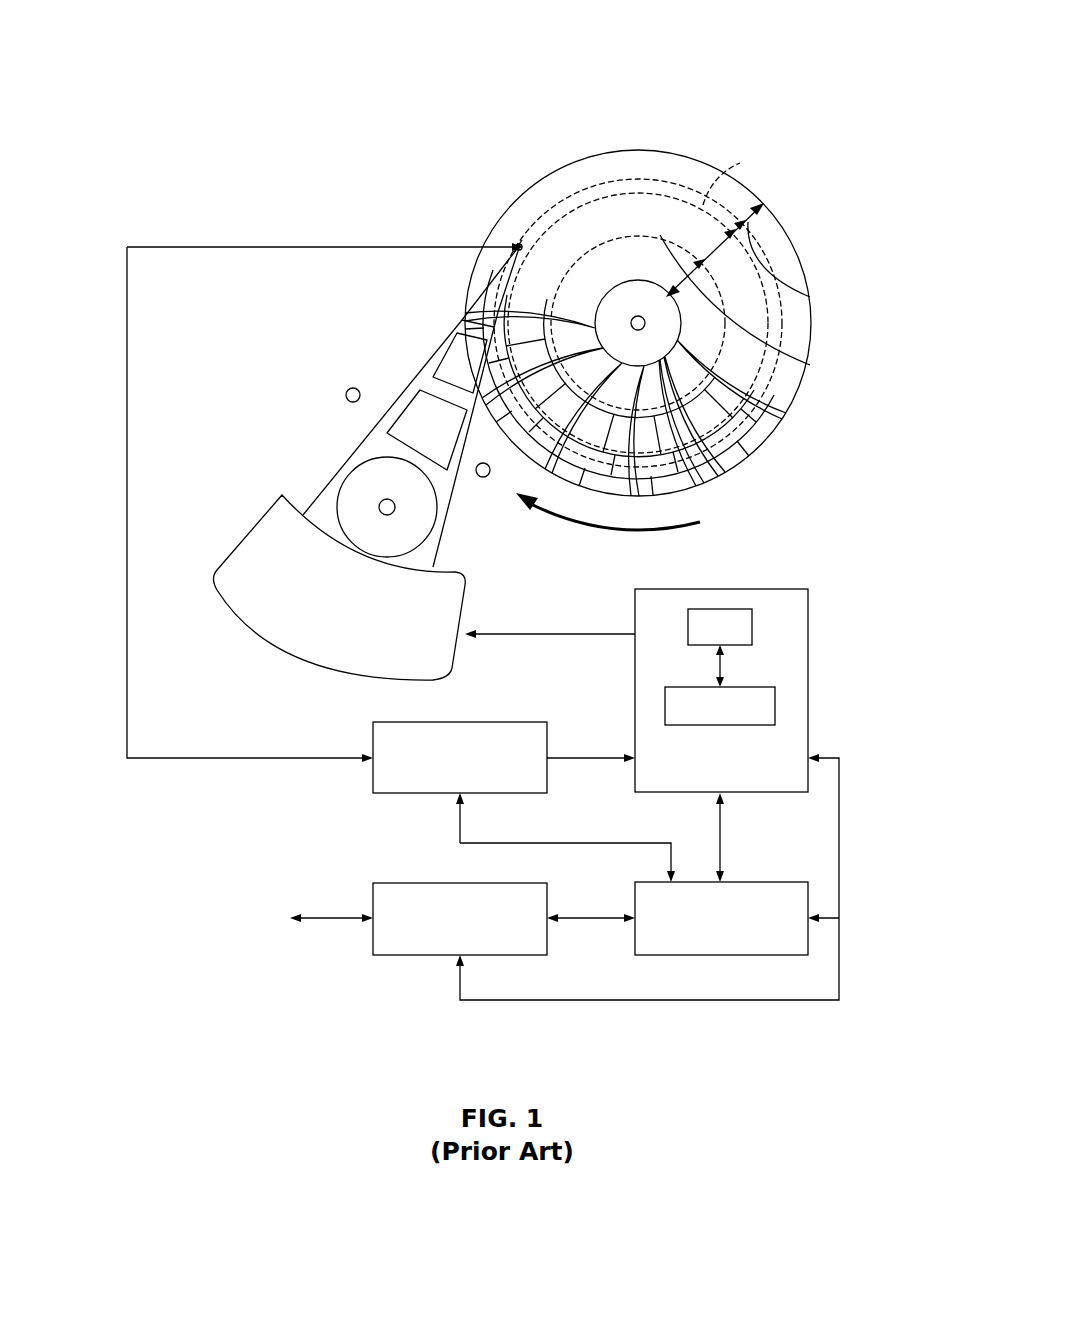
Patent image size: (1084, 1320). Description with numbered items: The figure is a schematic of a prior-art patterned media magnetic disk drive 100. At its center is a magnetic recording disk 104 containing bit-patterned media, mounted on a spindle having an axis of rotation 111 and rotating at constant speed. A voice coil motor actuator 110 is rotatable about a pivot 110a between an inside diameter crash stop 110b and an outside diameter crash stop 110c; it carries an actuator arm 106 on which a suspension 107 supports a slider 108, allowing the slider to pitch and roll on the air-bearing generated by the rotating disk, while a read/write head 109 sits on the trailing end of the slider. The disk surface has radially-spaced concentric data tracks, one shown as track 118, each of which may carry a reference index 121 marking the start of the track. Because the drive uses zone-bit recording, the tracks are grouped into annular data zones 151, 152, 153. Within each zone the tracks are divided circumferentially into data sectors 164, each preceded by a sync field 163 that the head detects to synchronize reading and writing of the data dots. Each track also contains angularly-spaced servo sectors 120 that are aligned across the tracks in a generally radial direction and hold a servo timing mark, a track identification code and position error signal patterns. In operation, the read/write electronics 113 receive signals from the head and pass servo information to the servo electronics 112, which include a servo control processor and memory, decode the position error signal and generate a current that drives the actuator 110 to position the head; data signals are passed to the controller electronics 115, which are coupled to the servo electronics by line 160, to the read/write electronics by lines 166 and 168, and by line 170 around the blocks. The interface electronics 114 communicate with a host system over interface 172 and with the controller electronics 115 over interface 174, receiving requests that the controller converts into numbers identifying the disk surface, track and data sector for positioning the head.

The patterned media magnetic disk drive 100 is at (228, 82).
The magnetic recording disk 104 is at (600, 157).
The actuator arm 106 is at (442, 344).
The suspension 107 is at (490, 300).
The slider 108 is at (518, 246).
The read/write head 109 is at (522, 243).
The voice coil motor (VCM) actuator 110 is at (284, 498).
The pivot 110a is at (387, 498).
The inside diameter (ID) crash stop 110b is at (483, 477).
The outside diameter (OD) crash stop 110c is at (350, 389).
The axis of rotation 111 is at (638, 318).
The servo electronics 112 is at (790, 589).
The read/write (R/W) electronics 113 is at (527, 722).
The interface electronics 114 is at (403, 883).
The controller electronics 115 is at (657, 955).
The data track 118 is at (745, 181).
The servo sectors 120 is at (552, 467).
The reference index 121 is at (785, 411).
The data zone 151 is at (808, 297).
The data zone 152 is at (808, 364).
The data zone 153 is at (690, 280).
The servo-controller signal line 160 is at (722, 846).
The sync fields 163 is at (740, 437).
The data sectors 164 is at (762, 432).
The read signal line 166 is at (595, 760).
The data line to controller 168 is at (618, 843).
The control signal line 170 is at (840, 850).
The interface 172 is at (332, 916).
The interface 174 is at (593, 916).